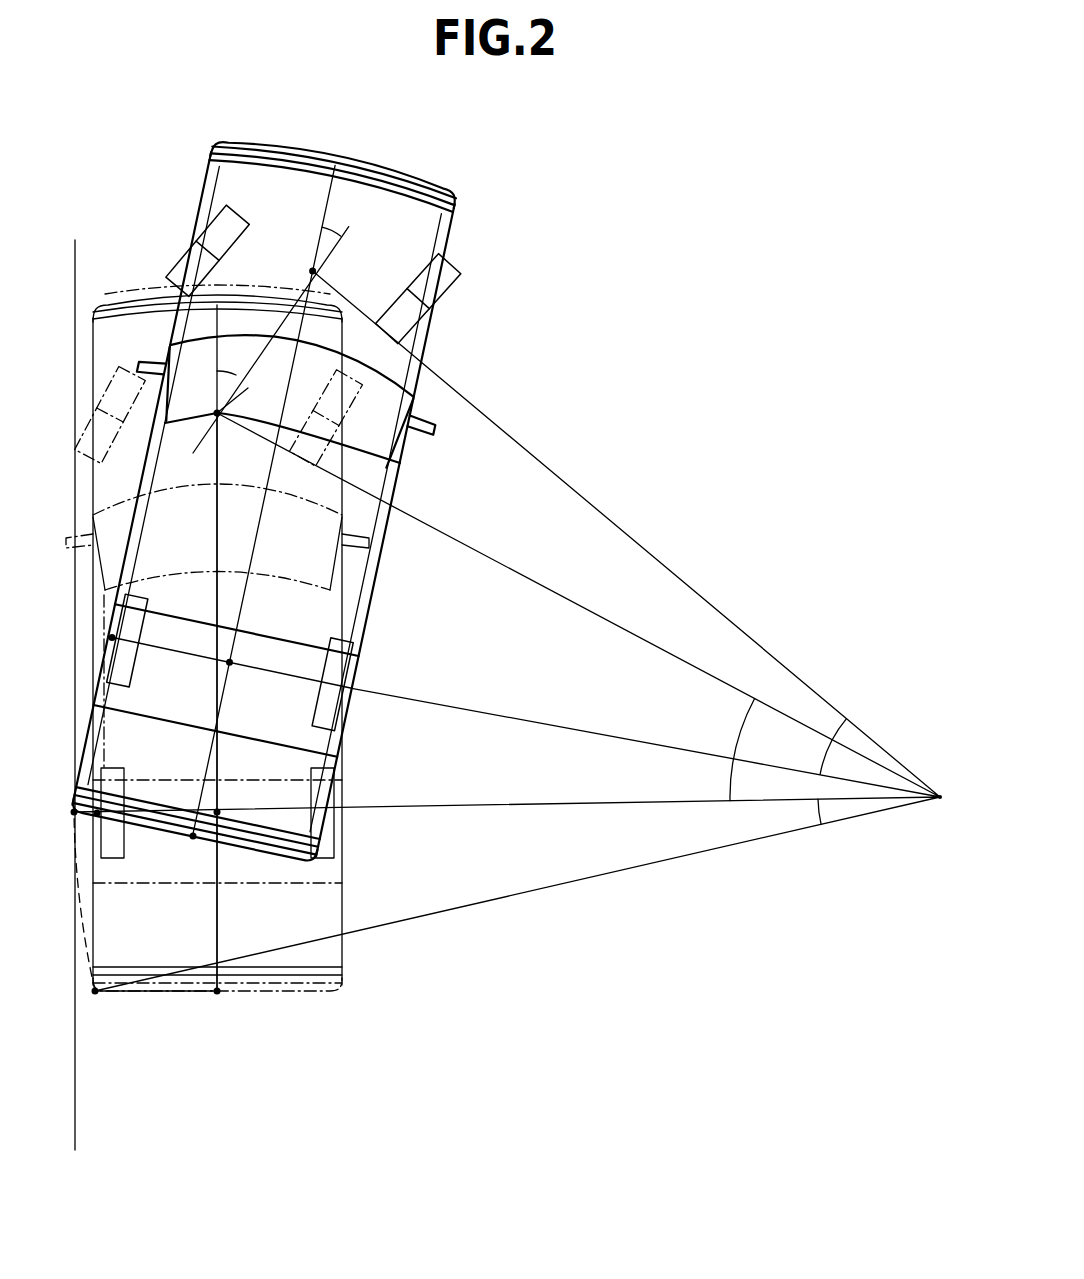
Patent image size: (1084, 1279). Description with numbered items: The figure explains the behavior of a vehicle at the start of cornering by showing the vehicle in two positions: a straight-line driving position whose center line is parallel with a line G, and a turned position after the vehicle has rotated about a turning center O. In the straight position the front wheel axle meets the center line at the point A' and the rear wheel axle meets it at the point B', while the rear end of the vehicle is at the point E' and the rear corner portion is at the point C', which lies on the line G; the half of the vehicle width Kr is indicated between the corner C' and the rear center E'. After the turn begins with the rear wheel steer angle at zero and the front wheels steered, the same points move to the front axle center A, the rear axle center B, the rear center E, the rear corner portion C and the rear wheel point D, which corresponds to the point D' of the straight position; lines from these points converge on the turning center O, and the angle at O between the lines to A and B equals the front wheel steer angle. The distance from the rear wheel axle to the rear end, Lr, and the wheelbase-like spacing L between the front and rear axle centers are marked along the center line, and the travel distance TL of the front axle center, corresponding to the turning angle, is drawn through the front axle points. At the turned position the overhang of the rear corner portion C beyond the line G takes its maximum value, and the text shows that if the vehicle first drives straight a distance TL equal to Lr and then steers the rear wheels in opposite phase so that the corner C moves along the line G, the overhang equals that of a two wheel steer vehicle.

The intersection between front wheel axle and vehicle center line A is at (295, 253).
The intersection between front wheel axle and vehicle center line A' is at (201, 391).
The intersection between rear wheel axle and vehicle center line B is at (252, 659).
The intersection between rear wheel axle and vehicle center line B' is at (236, 781).
The rear end portion (rear corner portion) of the vehicle C is at (63, 768).
The rear end portion (rear corner portion) of the vehicle C' is at (90, 936).
The rear left wheel point of turned vehicle D is at (82, 610).
The rear left wheel point of vehicle D' is at (124, 775).
The rear center of turned vehicle E is at (176, 857).
The rear center of vehicle E' is at (242, 1022).
The line G is at (69, 681).
The wheelbase L is at (218, 812).
The distance from rear wheel axle to rear end of vehicle Lr is at (220, 991).
The half of the vehicle width Kr is at (218, 994).
The travel distance of the center of the front wheel axle TL is at (271, 340).
The turning center O is at (940, 797).